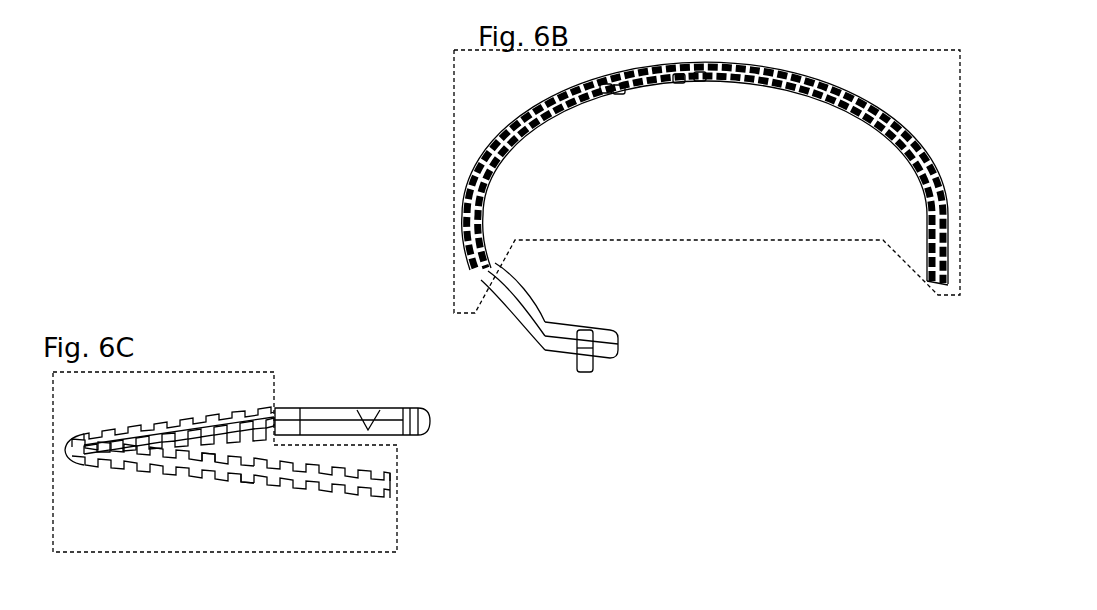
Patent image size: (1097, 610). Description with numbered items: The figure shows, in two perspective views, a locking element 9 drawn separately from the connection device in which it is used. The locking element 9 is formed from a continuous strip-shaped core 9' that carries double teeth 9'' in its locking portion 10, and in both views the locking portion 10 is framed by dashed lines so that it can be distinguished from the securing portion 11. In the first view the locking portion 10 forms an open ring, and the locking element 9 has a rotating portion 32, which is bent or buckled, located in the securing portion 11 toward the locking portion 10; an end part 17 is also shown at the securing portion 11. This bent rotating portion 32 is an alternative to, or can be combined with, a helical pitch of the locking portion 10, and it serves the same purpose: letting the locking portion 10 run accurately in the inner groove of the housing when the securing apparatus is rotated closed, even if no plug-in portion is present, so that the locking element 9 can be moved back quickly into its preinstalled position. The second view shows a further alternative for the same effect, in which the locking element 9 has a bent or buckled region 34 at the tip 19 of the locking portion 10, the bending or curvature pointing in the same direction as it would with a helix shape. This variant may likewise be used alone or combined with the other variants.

In FIG. 6B, the locking element 9 is at (705, 238).
In FIG. 6C, the locking element 9 is at (297, 461).
In FIG. 6B, the continuous strip-shaped core 9' is at (635, 112).
In FIG. 6C, the continuous strip-shaped core 9' is at (196, 496).
In FIG. 6B, the double teeth 9'' is at (667, 111).
In FIG. 6C, the double teeth 9'' is at (233, 506).
In FIG. 6B, the locking portion 10 is at (452, 157).
In FIG. 6C, the locking portion 10 is at (397, 530).
In FIG. 6B, the securing portion 11 is at (472, 313).
In FIG. 6C, the securing portion 11 is at (429, 402).
In FIG. 6B, the clip end / closure 17 is at (593, 360).
In FIG. 6C, the clip end / closure 17 is at (413, 425).
In FIG. 6B, the tip 19 is at (933, 266).
In FIG. 6C, the tip 19 is at (392, 487).
In FIG. 6B, the rotating portion 32 is at (505, 268).
In FIG. 6C, the bent or buckled region 34 is at (281, 497).